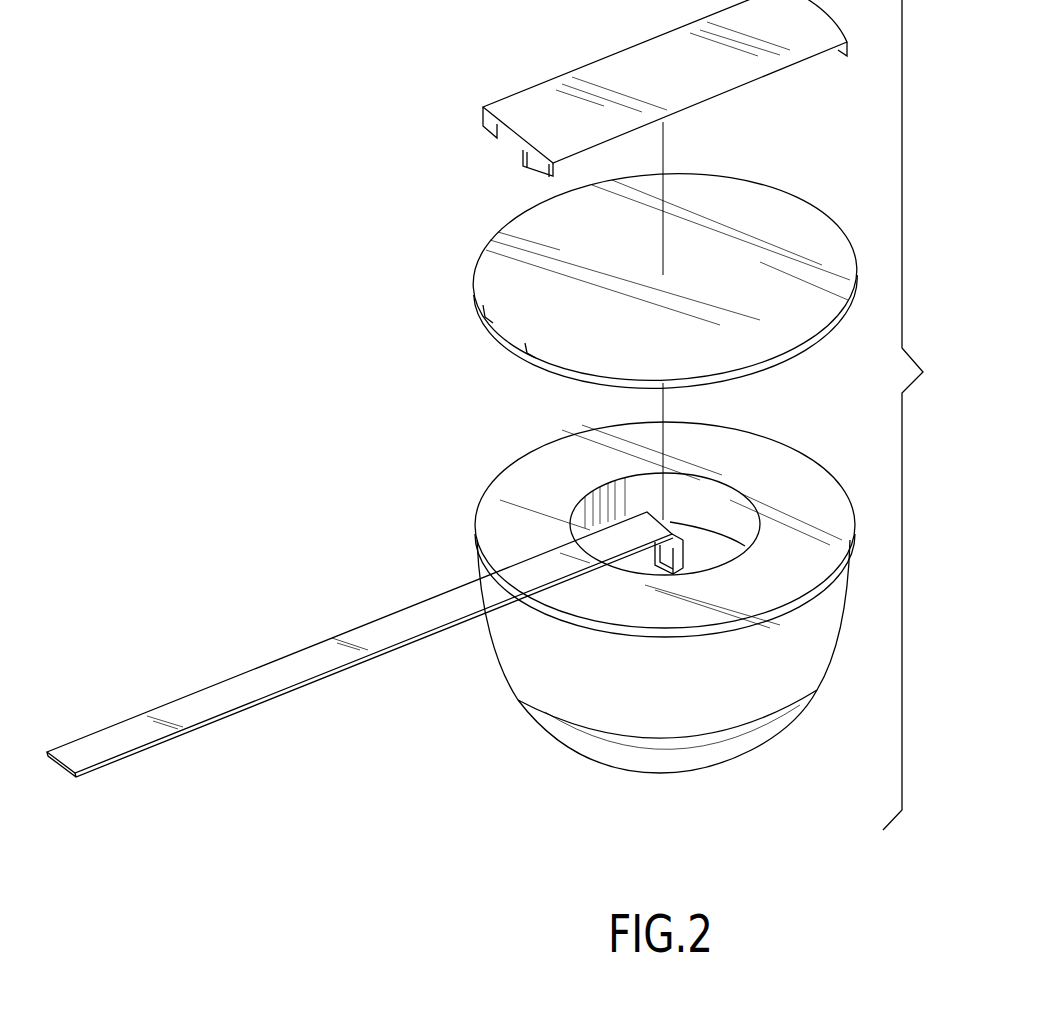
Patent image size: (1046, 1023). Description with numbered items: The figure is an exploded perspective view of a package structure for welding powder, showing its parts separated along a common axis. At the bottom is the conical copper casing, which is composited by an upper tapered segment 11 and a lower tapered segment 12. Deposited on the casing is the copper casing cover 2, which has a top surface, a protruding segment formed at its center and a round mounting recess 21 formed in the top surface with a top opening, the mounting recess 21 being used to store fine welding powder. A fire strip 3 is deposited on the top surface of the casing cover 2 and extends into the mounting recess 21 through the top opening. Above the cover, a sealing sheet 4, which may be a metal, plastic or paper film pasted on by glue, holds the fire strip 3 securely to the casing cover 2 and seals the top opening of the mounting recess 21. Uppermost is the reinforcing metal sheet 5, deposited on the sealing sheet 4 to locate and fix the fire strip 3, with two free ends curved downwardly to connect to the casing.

The metal sheet 5 is at (642, 72).
The sealing sheet 4 is at (507, 285).
The casing cover 2 is at (538, 473).
The mounting recess 21 is at (713, 508).
The fire strip 3 is at (273, 670).
The upper tapered segment 11 is at (557, 678).
The lower tapered segment 12 is at (707, 757).